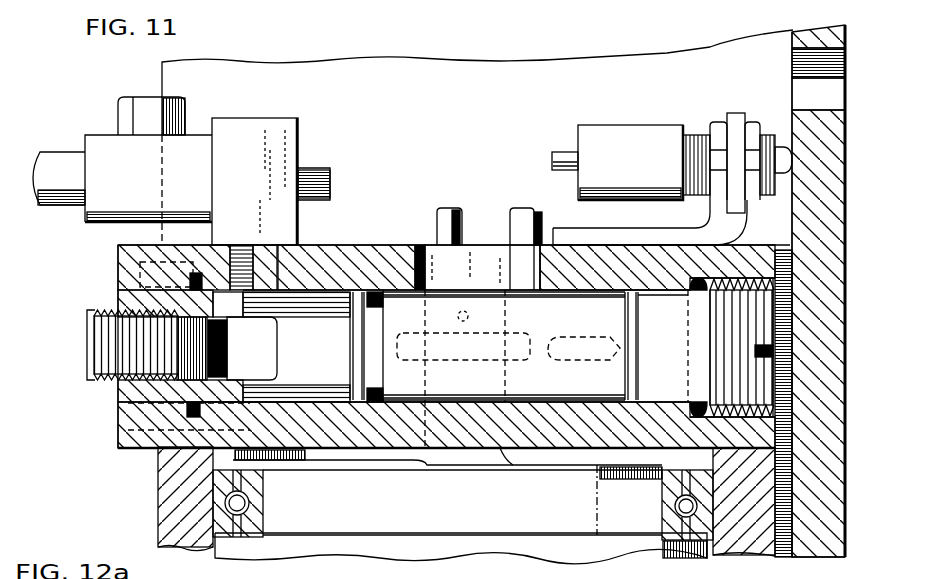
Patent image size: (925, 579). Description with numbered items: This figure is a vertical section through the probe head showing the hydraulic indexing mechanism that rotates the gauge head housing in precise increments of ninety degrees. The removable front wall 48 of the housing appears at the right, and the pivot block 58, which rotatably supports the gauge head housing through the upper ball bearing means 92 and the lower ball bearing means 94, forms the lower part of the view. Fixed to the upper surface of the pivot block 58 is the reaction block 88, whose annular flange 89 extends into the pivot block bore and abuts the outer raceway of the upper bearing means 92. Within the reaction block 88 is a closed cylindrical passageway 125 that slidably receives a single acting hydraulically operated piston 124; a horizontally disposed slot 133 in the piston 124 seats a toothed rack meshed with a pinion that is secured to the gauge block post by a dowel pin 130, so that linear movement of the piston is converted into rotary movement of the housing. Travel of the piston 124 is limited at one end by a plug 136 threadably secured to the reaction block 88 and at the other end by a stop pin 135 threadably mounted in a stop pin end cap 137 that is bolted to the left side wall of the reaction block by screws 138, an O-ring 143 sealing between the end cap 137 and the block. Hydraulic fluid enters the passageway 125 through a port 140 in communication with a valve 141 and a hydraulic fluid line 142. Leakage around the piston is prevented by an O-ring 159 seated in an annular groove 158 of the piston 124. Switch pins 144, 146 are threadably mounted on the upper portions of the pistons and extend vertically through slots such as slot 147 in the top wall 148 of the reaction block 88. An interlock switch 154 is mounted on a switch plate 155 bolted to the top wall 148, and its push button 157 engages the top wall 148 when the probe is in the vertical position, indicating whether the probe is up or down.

The front wall 48 is at (818, 523).
The pivot block 58 is at (168, 493).
The reaction block 88 is at (370, 251).
The annular flange 89 is at (264, 468).
The upper ball bearing means 92 is at (713, 523).
The lower ball bearing means 94 is at (250, 522).
The piston 124 is at (400, 374).
The cylindrical passageway 125 is at (326, 361).
The dowel pin 130 is at (463, 369).
The slot 133 is at (550, 345).
The stop pin 135 is at (86, 330).
The plug 136 is at (678, 338).
The stop pin end cap 137 is at (130, 438).
The screws 138 is at (128, 400).
The port 140 is at (248, 262).
The valve 141 is at (185, 140).
The hydraulic fluid line 142 is at (55, 160).
The O-ring 143 is at (197, 275).
The switch pin 144 is at (448, 210).
The switch pin 146 is at (518, 210).
The slot 147 is at (478, 255).
The top wall 148 is at (412, 245).
The switch 154 is at (627, 133).
The switch plate 155 is at (668, 233).
The push button 157 is at (802, 158).
The annular groove 158 is at (352, 398).
The O-ring 159 is at (384, 299).